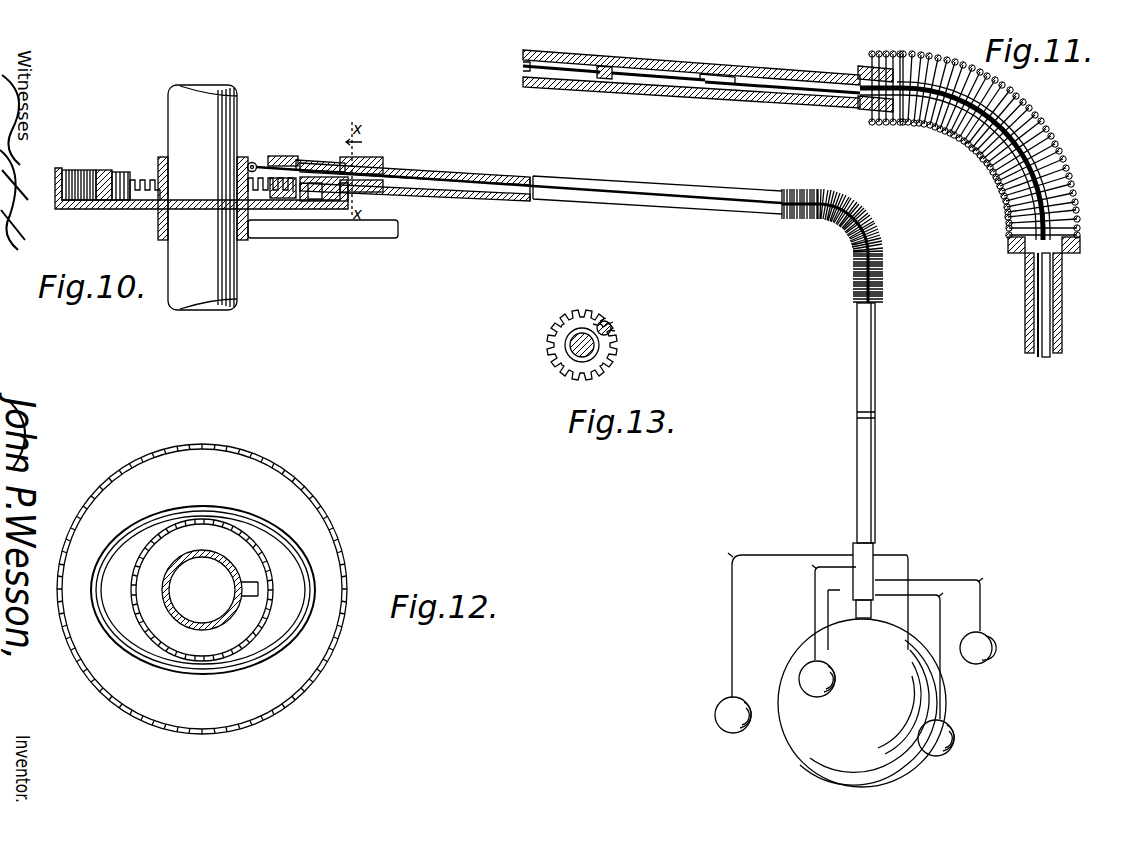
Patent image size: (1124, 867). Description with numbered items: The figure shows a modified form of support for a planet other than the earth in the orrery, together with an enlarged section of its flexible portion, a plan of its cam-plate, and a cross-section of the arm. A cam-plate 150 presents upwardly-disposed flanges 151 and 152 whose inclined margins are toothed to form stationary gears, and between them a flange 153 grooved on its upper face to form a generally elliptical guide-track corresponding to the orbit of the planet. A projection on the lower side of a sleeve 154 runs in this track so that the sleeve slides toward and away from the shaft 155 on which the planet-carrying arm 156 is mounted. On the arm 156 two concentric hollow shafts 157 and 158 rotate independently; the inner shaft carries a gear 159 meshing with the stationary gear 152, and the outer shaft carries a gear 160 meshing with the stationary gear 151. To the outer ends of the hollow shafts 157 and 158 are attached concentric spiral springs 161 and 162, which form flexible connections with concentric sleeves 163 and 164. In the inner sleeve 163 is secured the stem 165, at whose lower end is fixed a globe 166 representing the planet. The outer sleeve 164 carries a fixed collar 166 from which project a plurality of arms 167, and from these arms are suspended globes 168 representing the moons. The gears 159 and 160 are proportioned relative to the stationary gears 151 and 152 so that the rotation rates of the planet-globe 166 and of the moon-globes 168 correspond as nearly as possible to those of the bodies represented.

In FIG. 10, the cam-plate 150 is at (252, 241).
In FIG. 10, the upwardly-disposed flange forming stationary gear 151 is at (72, 170).
In FIG. 12, the upwardly-disposed flange forming stationary gear 151 is at (268, 453).
In FIG. 10, the upwardly-disposed flange forming stationary gear 152 is at (125, 172).
In FIG. 12, the upwardly-disposed flange forming stationary gear 152 is at (168, 521).
In FIG. 10, the grooved flange 153 is at (104, 170).
In FIG. 12, the grooved flange 153 is at (268, 505).
In FIG. 10, the sleeve 154 is at (318, 158).
In FIG. 10, the shaft 155 is at (237, 118).
In FIG. 12, the shaft 155 is at (222, 575).
In FIG. 10, the planet-carrying arm 156 is at (255, 162).
In FIG. 11, the planet-carrying arm 156 is at (524, 65).
In FIG. 13, the planet-carrying arm 156 is at (566, 336).
In FIG. 10, the inner hollow shaft 157 is at (420, 192).
In FIG. 11, the inner hollow shaft 157 is at (524, 52).
In FIG. 13, the inner hollow shaft 157 is at (570, 349).
In FIG. 10, the outer hollow shaft 158 is at (442, 168).
In FIG. 11, the outer hollow shaft 158 is at (662, 58).
In FIG. 10, the gear 159 is at (290, 151).
In FIG. 10, the gear 160 is at (378, 157).
In FIG. 13, the gear 160 is at (580, 311).
In FIG. 10, the spiral spring 161 is at (850, 228).
In FIG. 11, the spiral spring 161 is at (1023, 124).
In FIG. 10, the spiral spring 162 is at (826, 198).
In FIG. 11, the spiral spring 162 is at (1040, 152).
In FIG. 11, the inner sleeve 163 is at (1046, 360).
In FIG. 10, the outer sleeve 164 is at (857, 361).
In FIG. 11, the outer sleeve 164 is at (1062, 338).
In FIG. 11, the stem 165 is at (1038, 360).
In FIG. 10, the planet globe 166 is at (873, 548).
In FIG. 10, the arms 167 is at (824, 560).
In FIG. 10, the moon globes 168 is at (803, 672).